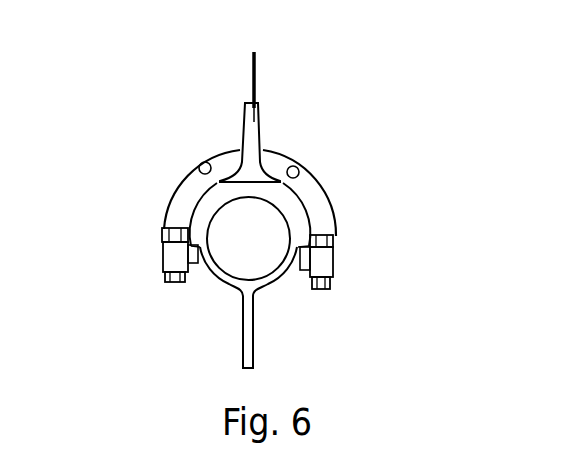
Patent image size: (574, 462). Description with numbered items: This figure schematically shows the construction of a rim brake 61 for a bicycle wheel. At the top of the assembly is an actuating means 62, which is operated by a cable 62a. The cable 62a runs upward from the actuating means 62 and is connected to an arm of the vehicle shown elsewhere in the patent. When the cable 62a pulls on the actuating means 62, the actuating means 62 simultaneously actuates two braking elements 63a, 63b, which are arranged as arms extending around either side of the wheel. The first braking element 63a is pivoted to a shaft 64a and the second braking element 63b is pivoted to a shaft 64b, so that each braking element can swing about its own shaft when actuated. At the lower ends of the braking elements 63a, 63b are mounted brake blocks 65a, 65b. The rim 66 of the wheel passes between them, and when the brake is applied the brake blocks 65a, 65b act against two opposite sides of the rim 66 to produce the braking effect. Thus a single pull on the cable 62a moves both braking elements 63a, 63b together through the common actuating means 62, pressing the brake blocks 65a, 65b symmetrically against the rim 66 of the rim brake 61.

The rim brake 61 is at (281, 185).
The actuating means 62 is at (243, 135).
The cable 62a is at (256, 73).
The braking element 63a is at (170, 203).
The braking element 63b is at (322, 213).
The shaft 64a is at (199, 164).
The shaft 64b is at (299, 171).
The brake block 65a is at (170, 262).
The brake block 65b is at (330, 267).
The rim 66 is at (275, 282).